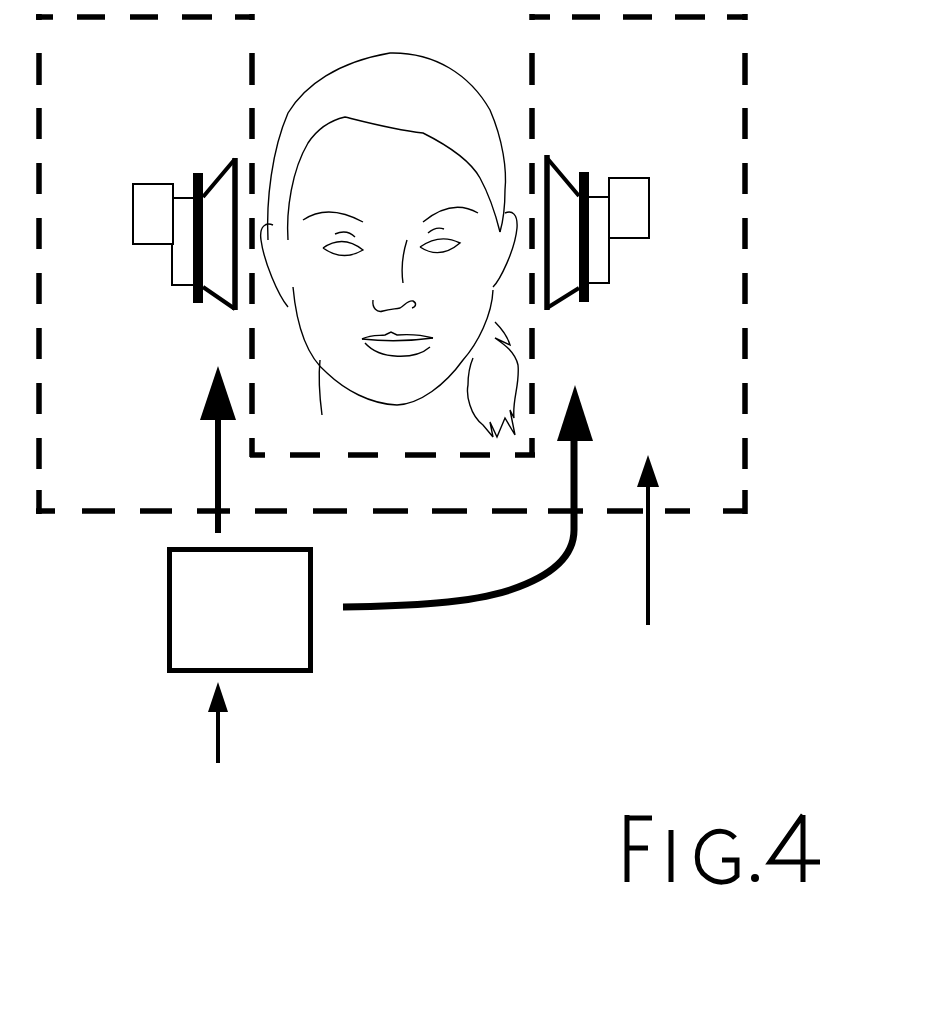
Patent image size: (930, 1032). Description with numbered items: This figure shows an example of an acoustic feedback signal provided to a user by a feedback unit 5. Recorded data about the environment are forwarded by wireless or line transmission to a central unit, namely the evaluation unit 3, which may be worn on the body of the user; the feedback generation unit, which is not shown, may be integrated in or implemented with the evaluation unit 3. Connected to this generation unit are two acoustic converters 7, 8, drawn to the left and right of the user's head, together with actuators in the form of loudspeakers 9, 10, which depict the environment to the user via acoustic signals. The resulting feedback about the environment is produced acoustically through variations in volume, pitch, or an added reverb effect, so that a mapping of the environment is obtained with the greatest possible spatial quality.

The loudspeaker 10 is at (119, 213).
The acoustic converter 7 is at (195, 254).
The loudspeaker 9 is at (647, 205).
The acoustic converter 8 is at (578, 249).
The feedback unit 5 is at (657, 551).
The evaluation unit 3 is at (232, 729).